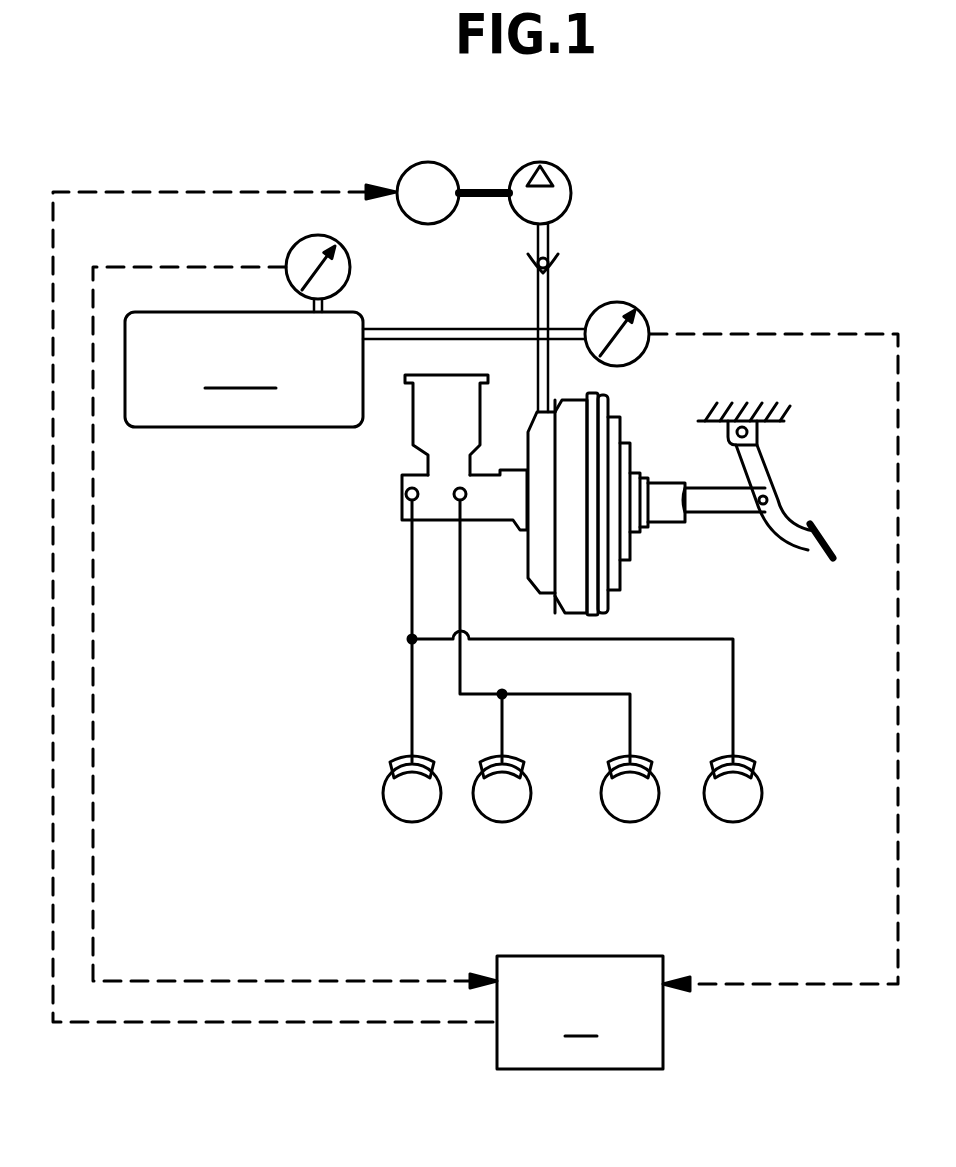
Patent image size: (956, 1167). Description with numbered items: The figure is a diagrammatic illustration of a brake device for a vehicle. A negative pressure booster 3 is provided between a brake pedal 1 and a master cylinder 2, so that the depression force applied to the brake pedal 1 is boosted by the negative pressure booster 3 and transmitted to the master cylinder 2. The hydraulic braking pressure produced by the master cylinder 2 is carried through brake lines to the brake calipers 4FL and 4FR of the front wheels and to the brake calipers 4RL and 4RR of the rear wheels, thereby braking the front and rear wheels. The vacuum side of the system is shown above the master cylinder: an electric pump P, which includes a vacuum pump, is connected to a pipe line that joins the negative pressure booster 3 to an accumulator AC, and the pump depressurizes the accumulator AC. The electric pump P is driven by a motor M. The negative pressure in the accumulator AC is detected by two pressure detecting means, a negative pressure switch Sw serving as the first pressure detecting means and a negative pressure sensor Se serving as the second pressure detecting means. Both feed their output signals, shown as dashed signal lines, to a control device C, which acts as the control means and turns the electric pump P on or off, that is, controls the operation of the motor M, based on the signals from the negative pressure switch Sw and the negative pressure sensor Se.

The brake pedal 1 is at (823, 528).
The master cylinder 2 is at (488, 502).
The negative pressure booster 3 is at (636, 414).
The brake caliper of front left wheel 4FL is at (400, 762).
The brake caliper of front right wheel 4FR is at (490, 765).
The brake caliper of rear left wheel 4RL is at (613, 768).
The brake caliper of rear right wheel 4RR is at (723, 767).
The motor M is at (443, 160).
The electric pump P is at (563, 163).
The negative pressure switch Sw is at (351, 267).
The negative pressure sensor Se is at (642, 317).
The accumulator AC is at (244, 369).
The control device C is at (580, 1012).